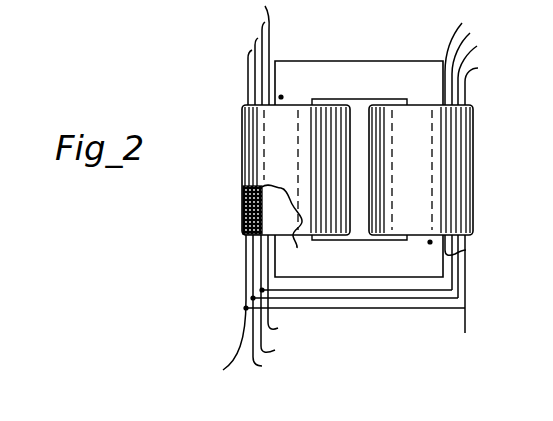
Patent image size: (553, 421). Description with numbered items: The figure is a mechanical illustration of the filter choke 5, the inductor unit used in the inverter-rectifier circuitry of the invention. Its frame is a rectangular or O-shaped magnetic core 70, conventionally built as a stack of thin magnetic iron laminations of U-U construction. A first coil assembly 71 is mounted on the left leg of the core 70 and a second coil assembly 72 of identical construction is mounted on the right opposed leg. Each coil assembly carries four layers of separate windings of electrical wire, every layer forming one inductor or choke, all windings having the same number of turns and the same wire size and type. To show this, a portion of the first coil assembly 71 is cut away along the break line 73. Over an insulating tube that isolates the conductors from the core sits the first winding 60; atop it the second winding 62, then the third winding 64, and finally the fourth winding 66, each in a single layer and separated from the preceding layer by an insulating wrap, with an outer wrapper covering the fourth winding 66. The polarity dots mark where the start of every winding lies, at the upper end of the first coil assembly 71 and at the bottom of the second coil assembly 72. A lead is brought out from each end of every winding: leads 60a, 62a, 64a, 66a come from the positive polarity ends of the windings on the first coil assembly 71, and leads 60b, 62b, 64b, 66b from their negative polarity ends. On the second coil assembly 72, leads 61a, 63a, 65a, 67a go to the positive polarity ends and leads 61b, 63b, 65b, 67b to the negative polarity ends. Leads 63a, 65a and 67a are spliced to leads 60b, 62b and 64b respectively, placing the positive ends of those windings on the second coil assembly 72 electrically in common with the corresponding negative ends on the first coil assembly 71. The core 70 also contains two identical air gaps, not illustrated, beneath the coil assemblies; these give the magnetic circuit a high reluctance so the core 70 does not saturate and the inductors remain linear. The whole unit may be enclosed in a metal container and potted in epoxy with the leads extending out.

The filter choke 5 is at (362, 322).
The magnetic core 70 is at (377, 50).
The first coil assembly 71 is at (292, 142).
The second coil assembly 72 is at (414, 142).
The break line 73 is at (280, 225).
The first winding 60 is at (242, 190).
The second winding 62 is at (242, 206).
The third winding 64 is at (242, 222).
The fourth winding 66 is at (243, 236).
The lead 60a is at (267, 12).
The lead 62a is at (262, 30).
The lead 64a is at (255, 46).
The lead 66a is at (248, 62).
The lead 60b is at (291, 285).
The lead 62b is at (355, 296).
The lead 64b is at (354, 307).
The lead 66b is at (322, 306).
The lead 61a is at (466, 250).
The lead 63a is at (458, 291).
The lead 65a is at (466, 268).
The lead 67b is at (465, 312).
The lead 61b is at (462, 25).
The lead 63b is at (468, 37).
The lead 65b is at (475, 50).
The lead 67a is at (478, 70).